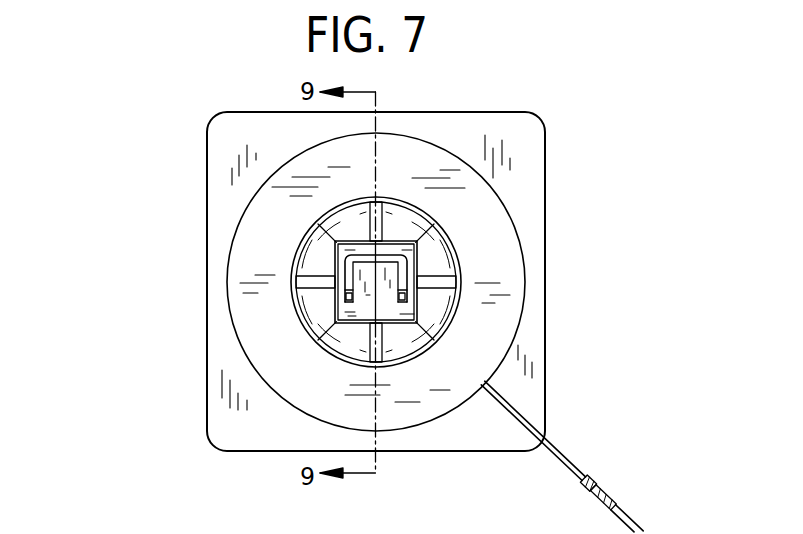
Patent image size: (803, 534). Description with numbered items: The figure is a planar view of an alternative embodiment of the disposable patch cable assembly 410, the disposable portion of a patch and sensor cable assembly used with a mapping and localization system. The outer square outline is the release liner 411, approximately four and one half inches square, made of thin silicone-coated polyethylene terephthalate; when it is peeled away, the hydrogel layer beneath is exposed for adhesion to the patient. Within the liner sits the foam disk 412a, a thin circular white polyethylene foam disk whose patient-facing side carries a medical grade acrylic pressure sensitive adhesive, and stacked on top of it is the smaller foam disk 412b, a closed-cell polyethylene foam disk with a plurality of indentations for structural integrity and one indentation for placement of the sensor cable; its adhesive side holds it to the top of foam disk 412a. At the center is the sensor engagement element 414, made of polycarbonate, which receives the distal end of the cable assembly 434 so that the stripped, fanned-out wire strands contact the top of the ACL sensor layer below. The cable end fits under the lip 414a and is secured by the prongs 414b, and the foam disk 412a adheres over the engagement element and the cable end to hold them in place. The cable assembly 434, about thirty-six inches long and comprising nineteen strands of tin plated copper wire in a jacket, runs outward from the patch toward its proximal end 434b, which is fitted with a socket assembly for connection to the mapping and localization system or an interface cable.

The disposable patch cable assembly 410 is at (135, 307).
The release liner 411 is at (268, 137).
The foam disk 412a is at (310, 393).
The foam disk 412b is at (325, 255).
The sensor engagement element 414 is at (406, 249).
The lip 414a is at (407, 268).
The prongs 414b is at (350, 297).
The cable assembly 434 is at (527, 420).
The proximal end of the cable assembly 434b is at (640, 530).